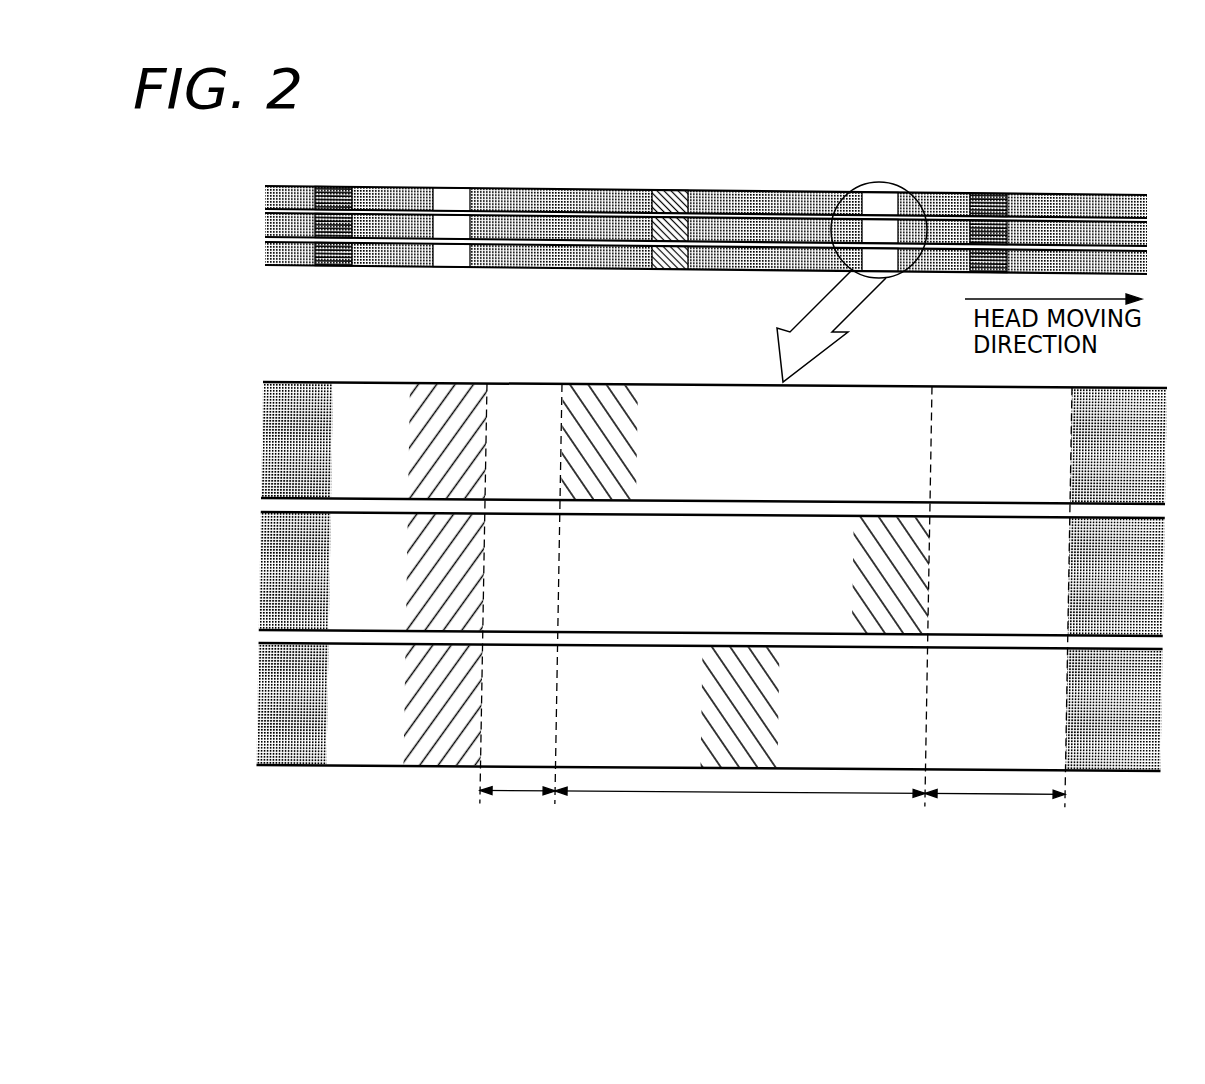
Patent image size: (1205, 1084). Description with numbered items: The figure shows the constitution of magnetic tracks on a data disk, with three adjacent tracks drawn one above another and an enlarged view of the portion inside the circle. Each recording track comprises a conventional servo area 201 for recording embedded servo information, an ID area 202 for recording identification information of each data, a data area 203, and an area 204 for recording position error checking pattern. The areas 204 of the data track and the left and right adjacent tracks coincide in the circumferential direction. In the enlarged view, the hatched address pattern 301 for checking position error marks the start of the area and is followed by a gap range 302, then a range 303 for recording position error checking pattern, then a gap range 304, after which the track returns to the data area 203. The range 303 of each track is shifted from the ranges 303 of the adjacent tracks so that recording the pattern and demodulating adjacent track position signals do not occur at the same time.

The servo area 201 is at (991, 196).
The ID area 202 is at (672, 191).
The data area 203 is at (735, 259).
The area for recording position error checking pattern 204 is at (876, 196).
The address pattern for checking position error 301 is at (400, 764).
The gap range 302 is at (521, 789).
The range for recording position error checking pattern 303 is at (728, 790).
The gap range 304 is at (992, 793).